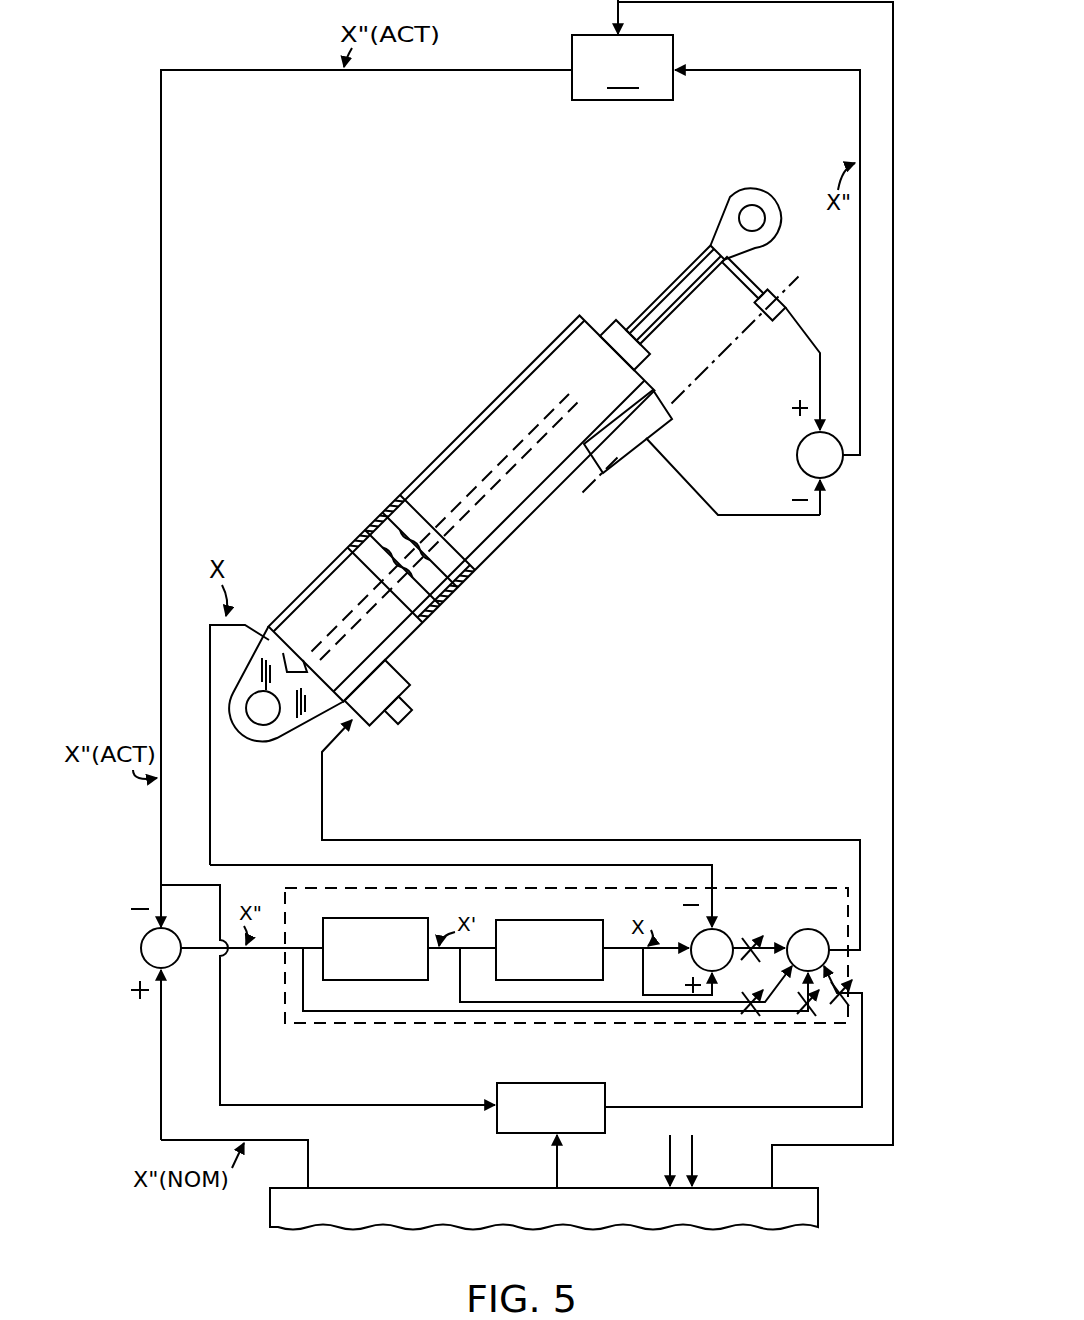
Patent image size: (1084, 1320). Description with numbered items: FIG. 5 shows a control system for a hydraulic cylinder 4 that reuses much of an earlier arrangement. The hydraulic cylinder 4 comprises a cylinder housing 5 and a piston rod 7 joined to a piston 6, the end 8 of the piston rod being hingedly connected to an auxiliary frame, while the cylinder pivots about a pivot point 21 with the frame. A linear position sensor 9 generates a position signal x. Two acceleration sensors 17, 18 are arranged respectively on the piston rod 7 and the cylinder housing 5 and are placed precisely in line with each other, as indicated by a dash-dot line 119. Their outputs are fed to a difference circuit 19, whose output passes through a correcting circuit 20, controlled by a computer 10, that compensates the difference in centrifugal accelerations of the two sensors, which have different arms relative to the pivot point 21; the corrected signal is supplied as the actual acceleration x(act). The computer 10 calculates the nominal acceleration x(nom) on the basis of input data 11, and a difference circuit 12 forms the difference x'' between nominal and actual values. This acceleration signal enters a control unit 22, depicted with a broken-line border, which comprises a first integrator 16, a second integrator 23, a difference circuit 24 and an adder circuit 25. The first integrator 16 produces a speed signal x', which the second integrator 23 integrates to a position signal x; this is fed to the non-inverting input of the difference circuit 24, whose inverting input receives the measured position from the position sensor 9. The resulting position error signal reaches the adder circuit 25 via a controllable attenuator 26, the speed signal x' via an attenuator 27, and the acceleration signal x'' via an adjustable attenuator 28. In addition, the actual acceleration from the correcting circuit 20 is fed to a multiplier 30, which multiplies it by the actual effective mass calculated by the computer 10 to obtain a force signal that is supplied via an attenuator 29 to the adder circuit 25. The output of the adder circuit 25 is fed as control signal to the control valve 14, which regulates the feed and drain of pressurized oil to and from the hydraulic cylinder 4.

The hydraulic cylinder 4 is at (412, 500).
The cylinder housing 5 is at (488, 428).
The piston 6 is at (382, 540).
The piston rod 7 is at (676, 293).
The end of piston rod 8 is at (738, 206).
The linear position sensor 9 is at (345, 556).
The computer 10 is at (728, 1195).
The input data 11 is at (668, 1152).
The difference circuit 12 is at (141, 948).
The control valve 14 is at (410, 684).
The first integrator 16 is at (384, 918).
The acceleration sensor 17 is at (789, 304).
The acceleration sensor 18 is at (627, 468).
The difference circuit 19 is at (797, 458).
The correcting circuit 20 is at (622, 67).
The pivot point 21 is at (265, 727).
The control unit 22 is at (752, 888).
The second integrator 23 is at (548, 920).
The difference circuit 24 is at (698, 958).
The adder circuit 25 is at (822, 946).
The controllable attenuator 26 is at (742, 938).
The attenuator 27 is at (752, 1014).
The adjustable attenuator 28 is at (797, 1017).
The attenuator 29 is at (840, 1006).
The multiplier 30 is at (560, 1083).
The measuring axis 119 is at (697, 381).